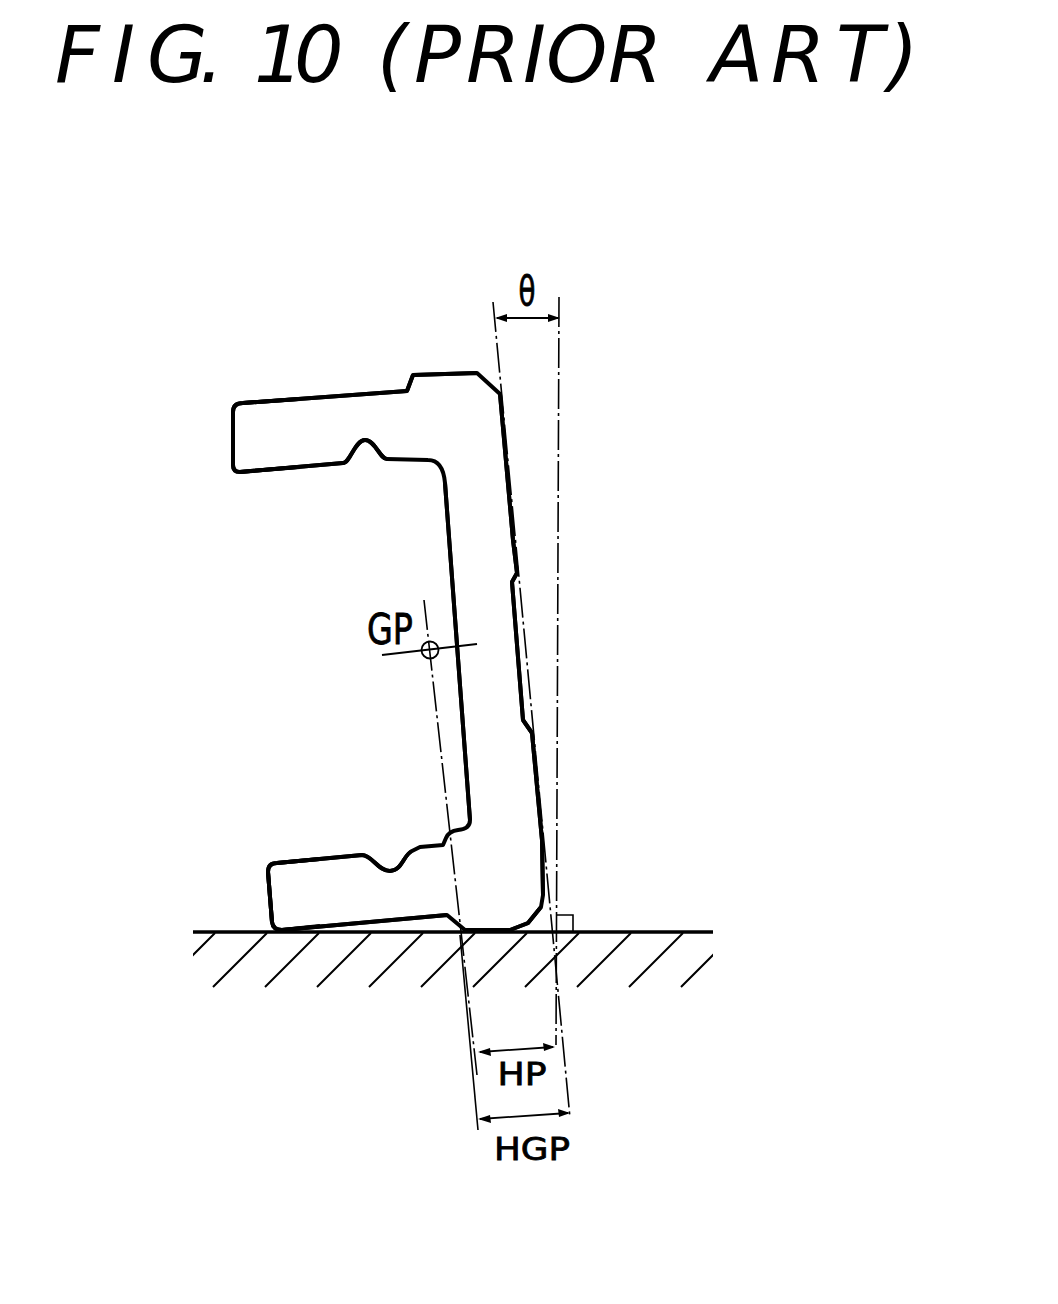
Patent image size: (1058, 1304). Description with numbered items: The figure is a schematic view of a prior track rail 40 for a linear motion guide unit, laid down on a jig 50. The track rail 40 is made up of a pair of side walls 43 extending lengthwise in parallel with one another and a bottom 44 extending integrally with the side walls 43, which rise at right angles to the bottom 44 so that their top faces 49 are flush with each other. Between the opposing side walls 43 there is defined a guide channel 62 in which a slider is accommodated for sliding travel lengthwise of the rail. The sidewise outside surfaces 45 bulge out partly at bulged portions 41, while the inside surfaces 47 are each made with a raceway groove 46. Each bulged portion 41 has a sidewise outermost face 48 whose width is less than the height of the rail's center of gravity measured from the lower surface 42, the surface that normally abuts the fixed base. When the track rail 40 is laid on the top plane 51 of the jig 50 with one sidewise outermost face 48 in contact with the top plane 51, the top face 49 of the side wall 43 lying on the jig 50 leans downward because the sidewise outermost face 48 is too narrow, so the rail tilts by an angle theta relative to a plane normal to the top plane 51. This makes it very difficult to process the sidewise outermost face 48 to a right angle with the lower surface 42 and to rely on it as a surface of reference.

The track rail 40 is at (305, 386).
The bulged portion 41 is at (435, 383).
The lower surface 42 is at (540, 805).
The side wall 43 is at (277, 450).
The bottom 44 is at (490, 547).
The sidewise outside surface 45 is at (347, 393).
The raceway groove 46 is at (365, 442).
The inside surface 47 is at (297, 472).
The sidewise outermost face 48 is at (452, 373).
The top face 49 is at (230, 442).
The jig 50 is at (628, 953).
The top plane 51 is at (660, 931).
The guide channel 62 is at (331, 660).